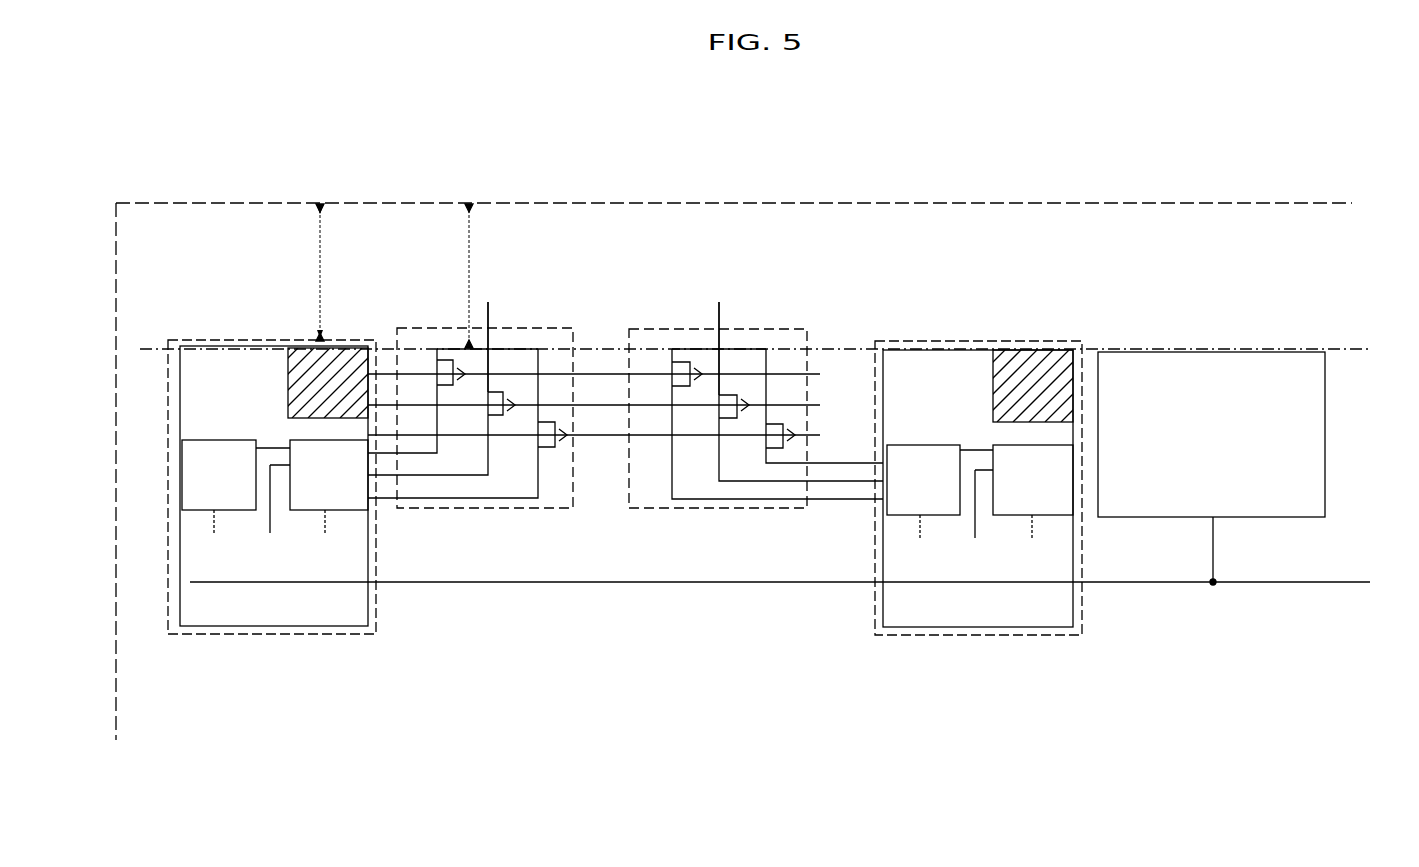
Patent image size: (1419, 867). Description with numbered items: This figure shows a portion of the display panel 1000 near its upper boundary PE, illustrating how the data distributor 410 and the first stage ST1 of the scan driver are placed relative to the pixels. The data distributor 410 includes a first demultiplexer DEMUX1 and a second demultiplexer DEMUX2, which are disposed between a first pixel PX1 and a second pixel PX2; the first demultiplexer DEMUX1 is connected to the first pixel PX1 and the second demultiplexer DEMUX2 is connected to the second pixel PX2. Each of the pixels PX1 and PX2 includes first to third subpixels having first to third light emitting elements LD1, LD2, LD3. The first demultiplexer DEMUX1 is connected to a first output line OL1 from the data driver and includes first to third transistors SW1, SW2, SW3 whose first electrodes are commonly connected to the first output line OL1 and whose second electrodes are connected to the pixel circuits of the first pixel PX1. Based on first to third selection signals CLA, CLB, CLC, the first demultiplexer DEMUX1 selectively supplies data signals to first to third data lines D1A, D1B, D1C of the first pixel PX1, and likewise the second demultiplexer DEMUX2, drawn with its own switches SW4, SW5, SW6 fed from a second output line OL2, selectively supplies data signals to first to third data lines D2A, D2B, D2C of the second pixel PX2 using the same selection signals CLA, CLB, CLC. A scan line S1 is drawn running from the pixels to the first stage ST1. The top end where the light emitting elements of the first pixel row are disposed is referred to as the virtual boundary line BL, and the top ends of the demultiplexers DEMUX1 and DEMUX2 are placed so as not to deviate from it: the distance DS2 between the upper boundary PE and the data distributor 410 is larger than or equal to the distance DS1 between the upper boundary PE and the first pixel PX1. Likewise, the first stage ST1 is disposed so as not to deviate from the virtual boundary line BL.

The display panel 1000 is at (1013, 127).
The upper boundary PE is at (1248, 201).
The virtual boundary line BL is at (768, 349).
The first scan line S1 is at (782, 567).
The distance DS1 is at (303, 272).
The distance DS2 is at (453, 276).
The first pixel PX1 is at (292, 637).
The second pixel PX2 is at (997, 638).
The first light emitting element LD1 is at (680, 385).
The second light emitting element LD2 is at (571, 477).
The third light emitting element LD3 is at (664, 477).
The first data line D1A is at (214, 540).
The second data line D1B is at (270, 540).
The third data line D1C is at (325, 540).
The first data line D2A is at (920, 544).
The second data line D2B is at (975, 544).
The third data line D2C is at (1032, 544).
The first selection signal CLA is at (874, 375).
The second selection signal CLB is at (874, 405).
The third selection signal CLC is at (874, 435).
The first demultiplexer DEMUX1 is at (413, 327).
The second demultiplexer DEMUX2 is at (647, 327).
The first transistor SW1 is at (416, 401).
The second transistor SW2 is at (441, 388).
The third transistor SW3 is at (467, 423).
The fourth switch SW4 is at (759, 424).
The fifth switch SW5 is at (780, 391).
The sixth switch SW6 is at (806, 406).
The first output line OL1 is at (487, 335).
The second output line OL2 is at (718, 336).
The first stage ST1 is at (1211, 468).
The data distributor 410 is at (787, 726).